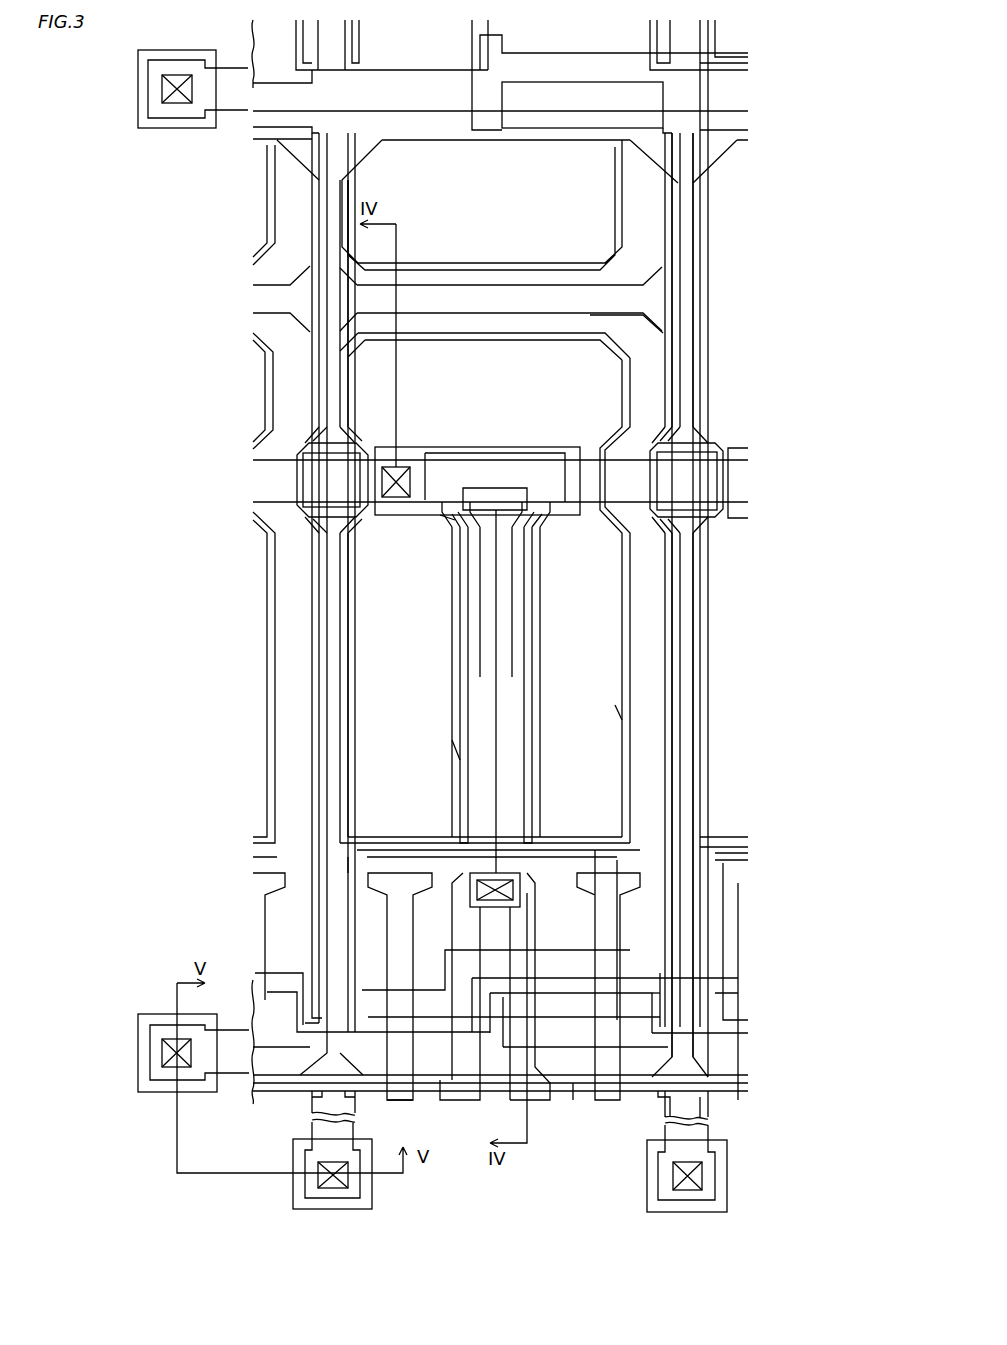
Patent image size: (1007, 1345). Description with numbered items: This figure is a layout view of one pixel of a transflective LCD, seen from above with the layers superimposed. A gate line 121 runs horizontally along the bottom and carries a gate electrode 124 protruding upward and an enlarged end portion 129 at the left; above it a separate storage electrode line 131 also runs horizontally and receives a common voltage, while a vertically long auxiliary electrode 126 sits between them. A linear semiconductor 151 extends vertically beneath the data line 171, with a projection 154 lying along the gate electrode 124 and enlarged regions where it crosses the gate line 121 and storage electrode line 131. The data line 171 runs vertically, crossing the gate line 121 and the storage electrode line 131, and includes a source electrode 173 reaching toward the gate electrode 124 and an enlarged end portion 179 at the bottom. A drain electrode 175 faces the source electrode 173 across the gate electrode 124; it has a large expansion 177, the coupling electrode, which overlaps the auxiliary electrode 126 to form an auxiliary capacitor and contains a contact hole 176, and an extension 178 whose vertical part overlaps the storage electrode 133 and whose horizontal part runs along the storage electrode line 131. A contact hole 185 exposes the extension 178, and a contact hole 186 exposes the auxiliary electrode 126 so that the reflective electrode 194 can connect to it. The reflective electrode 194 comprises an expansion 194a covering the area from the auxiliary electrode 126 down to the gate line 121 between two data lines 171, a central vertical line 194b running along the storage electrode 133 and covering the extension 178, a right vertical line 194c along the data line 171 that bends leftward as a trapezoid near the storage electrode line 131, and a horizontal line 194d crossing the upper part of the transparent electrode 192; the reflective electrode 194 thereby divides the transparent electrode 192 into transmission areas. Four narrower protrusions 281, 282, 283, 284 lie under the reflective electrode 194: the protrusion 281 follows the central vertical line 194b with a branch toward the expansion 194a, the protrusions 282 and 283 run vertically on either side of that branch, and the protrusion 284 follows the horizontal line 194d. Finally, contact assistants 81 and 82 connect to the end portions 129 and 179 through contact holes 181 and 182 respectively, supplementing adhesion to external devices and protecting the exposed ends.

The contact assistant 81 is at (138, 1030).
The contact assistant 82 is at (373, 1190).
The gate line 121 is at (437, 1092).
The gate electrode 124 is at (635, 998).
The auxiliary electrode 126 is at (630, 860).
The end portion 129 is at (150, 1080).
The storage electrode line 131 is at (279, 460).
The storage electrode 133 is at (467, 612).
The linear semiconductor 151 is at (700, 735).
The projection 154 is at (578, 975).
The data line 171 is at (708, 660).
The source electrode 173 is at (572, 1095).
The drain electrode 175 is at (615, 1005).
The contact hole 176 is at (500, 890).
The expansion (coupling electrode) 177 is at (620, 886).
The extension 178 is at (467, 640).
The end portion 179 is at (303, 1159).
The contact hole 181 is at (162, 1052).
The contact hole 182 is at (318, 1177).
The contact hole 185 is at (382, 481).
The contact hole 186 is at (470, 892).
The transparent electrode 192 is at (623, 197).
The reflective electrode 194 is at (140, 563).
The expansion 194a is at (340, 882).
The central vertical line 194b is at (457, 753).
The right vertical line 194c is at (623, 713).
The horizontal line 194d is at (450, 518).
The protrusion 281 is at (480, 677).
The protrusion 282 is at (382, 933).
The protrusion 283 is at (623, 915).
The protrusion 284 is at (575, 285).